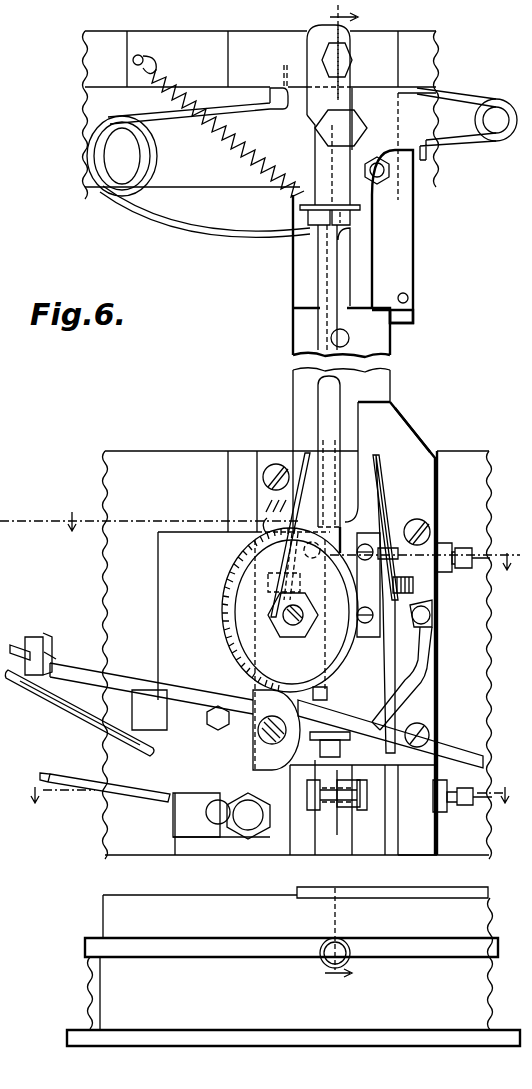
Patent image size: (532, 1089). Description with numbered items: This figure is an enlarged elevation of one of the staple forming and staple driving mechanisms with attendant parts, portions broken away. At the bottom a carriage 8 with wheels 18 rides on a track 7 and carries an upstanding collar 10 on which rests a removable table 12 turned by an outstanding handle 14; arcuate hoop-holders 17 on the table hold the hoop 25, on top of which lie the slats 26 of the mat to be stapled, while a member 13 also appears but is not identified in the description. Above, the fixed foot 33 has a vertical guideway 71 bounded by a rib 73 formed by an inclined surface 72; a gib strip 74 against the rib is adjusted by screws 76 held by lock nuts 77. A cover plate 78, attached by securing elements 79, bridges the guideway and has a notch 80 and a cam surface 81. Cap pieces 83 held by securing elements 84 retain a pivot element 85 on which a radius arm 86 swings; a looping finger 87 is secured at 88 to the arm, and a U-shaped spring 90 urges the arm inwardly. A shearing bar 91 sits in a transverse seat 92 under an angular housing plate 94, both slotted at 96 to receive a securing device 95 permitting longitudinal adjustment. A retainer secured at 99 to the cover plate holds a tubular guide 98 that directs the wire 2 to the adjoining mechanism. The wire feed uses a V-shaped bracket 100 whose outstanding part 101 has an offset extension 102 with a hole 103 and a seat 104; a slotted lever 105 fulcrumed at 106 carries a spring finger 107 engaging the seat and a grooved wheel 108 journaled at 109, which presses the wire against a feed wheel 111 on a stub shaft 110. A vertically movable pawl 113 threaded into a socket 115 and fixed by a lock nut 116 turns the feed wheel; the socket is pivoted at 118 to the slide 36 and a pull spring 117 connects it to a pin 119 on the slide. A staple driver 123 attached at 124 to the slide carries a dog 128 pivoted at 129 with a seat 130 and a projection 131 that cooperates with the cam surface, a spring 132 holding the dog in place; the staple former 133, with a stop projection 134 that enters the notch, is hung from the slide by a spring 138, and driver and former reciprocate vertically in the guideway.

The wire 2 is at (12, 644).
The tracks 7 is at (351, 504).
The carriage 8 is at (163, 1020).
The collar 10 is at (100, 987).
The table 12 is at (63, 957).
The rail member 13 is at (522, 693).
The handle 14 is at (323, 960).
The hoop-holders 17 is at (269, 849).
The wheels 18 is at (524, 760).
The hoop 25 is at (115, 917).
The slats 26 is at (328, 880).
The foot 33 is at (155, 460).
The slide 36 is at (107, 53).
The guideway 71 is at (378, 847).
The inclined surface 72 is at (478, 685).
The rib 73 is at (420, 847).
The gib strip 74 is at (412, 810).
The screws 76 is at (455, 550).
The lock nuts 77 is at (442, 545).
The cover plate 78 is at (262, 490).
The securing elements 79 is at (277, 462).
The notch 80 is at (358, 430).
The cam surface 81 is at (418, 428).
The cap pieces 83 is at (426, 560).
The securing elements 84 is at (368, 543).
The pivot element 85 is at (414, 585).
The radius arm 86 is at (328, 837).
The looping finger 87 is at (345, 820).
The securing point 88 is at (318, 780).
The U-shaped spring 90 is at (383, 650).
The shearing bar 91 is at (397, 705).
The transverse seat 92 is at (267, 843).
The housing plate 94 is at (190, 830).
The securing device 95 is at (278, 755).
The slot 96 is at (218, 818).
The tubular guide 98 is at (453, 758).
The securing point 99 is at (432, 613).
The V-shaped bracket 100 is at (172, 550).
The outstanding part 101 is at (70, 665).
The offset extension 102 is at (40, 637).
The hole 103 is at (50, 653).
The seat 104 is at (55, 685).
The slotted lever 105 is at (180, 695).
The fulcrum 106 is at (213, 733).
The spring finger 107 is at (97, 693).
The grooved wheel 108 is at (240, 690).
The journal 109 is at (250, 750).
The stub shaft 110 is at (318, 638).
The feed wheel 111 is at (284, 505).
The pawl 113 is at (315, 384).
The socket 115 is at (328, 155).
The lock nut 116 is at (320, 212).
The pull spring 117 is at (226, 148).
The pivot 118 is at (322, 52).
The pin 119 is at (140, 55).
The staple driver 123 is at (385, 103).
The attachment point 124 is at (384, 102).
The dog 128 is at (407, 220).
The pivot 129 is at (393, 172).
The seat 130 is at (413, 311).
The projection 131 is at (407, 296).
The spring 132 is at (492, 102).
The staple former 133 is at (305, 338).
The stop projection 134 is at (352, 338).
The spring 138 is at (170, 215).